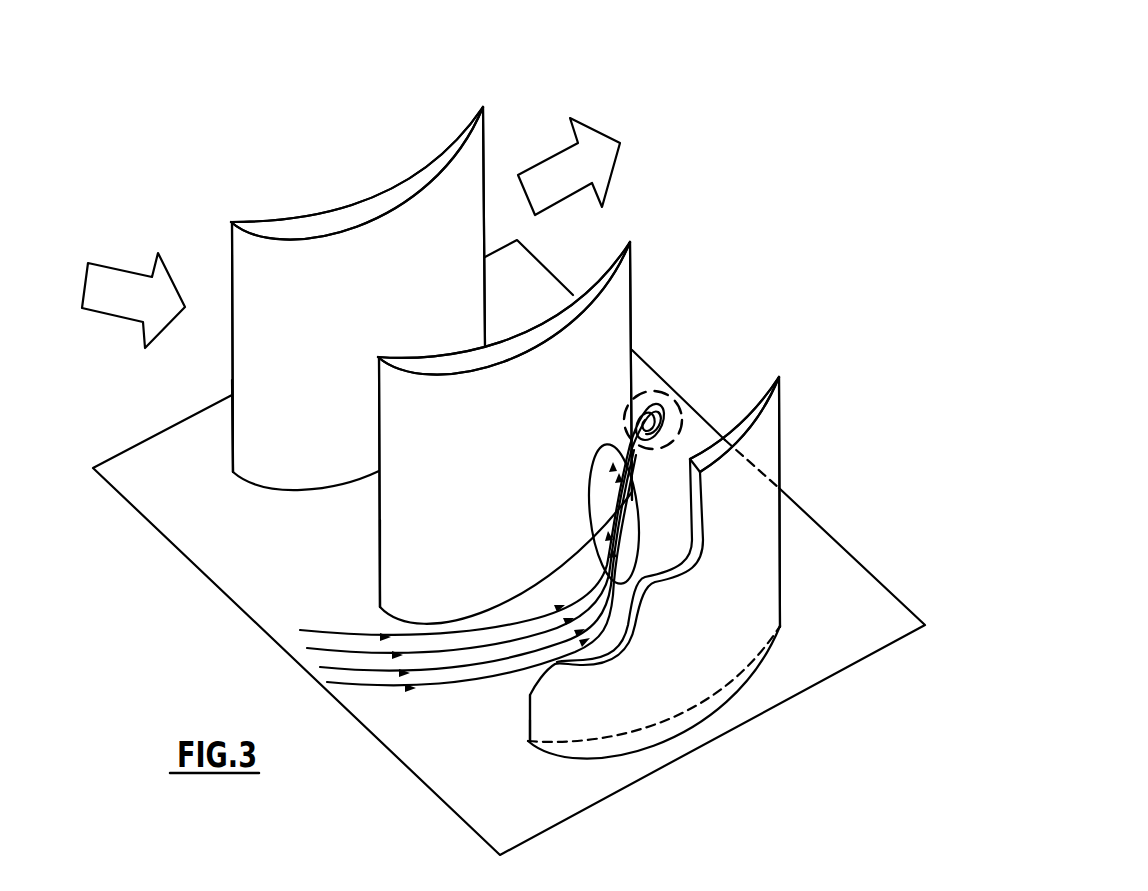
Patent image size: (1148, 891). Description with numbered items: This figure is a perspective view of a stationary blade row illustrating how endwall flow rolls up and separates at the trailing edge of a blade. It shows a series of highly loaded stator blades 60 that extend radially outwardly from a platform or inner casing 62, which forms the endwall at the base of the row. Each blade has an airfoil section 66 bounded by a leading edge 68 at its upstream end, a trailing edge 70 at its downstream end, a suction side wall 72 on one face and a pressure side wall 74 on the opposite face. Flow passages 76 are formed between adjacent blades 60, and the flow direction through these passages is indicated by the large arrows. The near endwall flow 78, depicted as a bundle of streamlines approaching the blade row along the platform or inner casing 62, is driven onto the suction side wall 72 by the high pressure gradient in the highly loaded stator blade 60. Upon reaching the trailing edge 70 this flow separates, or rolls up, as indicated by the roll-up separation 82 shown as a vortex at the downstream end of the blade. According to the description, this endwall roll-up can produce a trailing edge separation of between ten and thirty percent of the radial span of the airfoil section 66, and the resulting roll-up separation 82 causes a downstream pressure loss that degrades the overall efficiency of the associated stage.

The stator blade 60 is at (315, 231).
The platform or inner casing 62 is at (837, 595).
The airfoil section 66 is at (253, 402).
The leading edge 68 is at (232, 223).
The trailing edge 70 is at (485, 128).
The suction side wall 72 is at (413, 232).
The pressure side wall 74 is at (375, 200).
The flow passage 76 is at (534, 142).
The near endwall flow 78 is at (348, 685).
The roll-up separation 82 is at (678, 407).